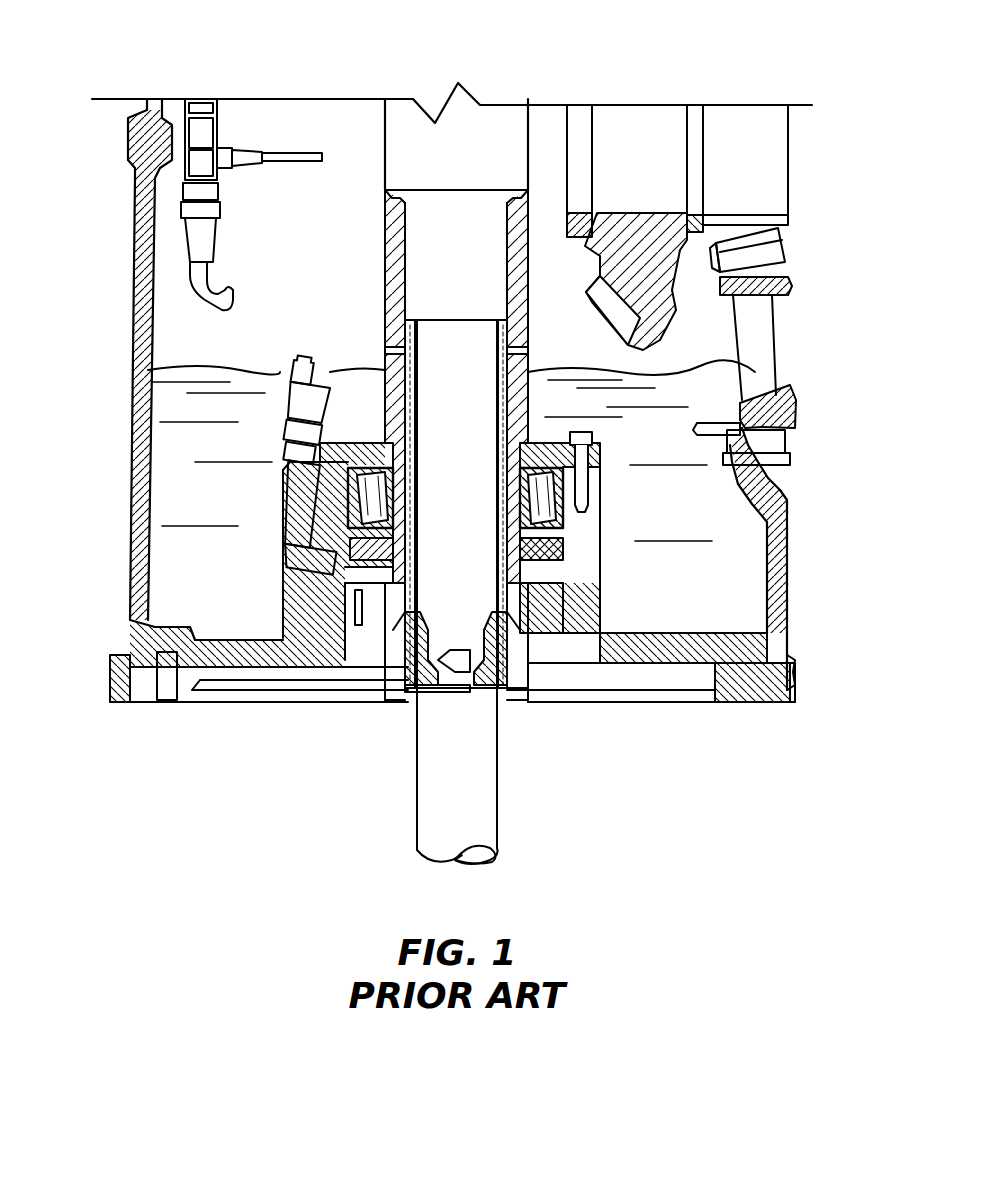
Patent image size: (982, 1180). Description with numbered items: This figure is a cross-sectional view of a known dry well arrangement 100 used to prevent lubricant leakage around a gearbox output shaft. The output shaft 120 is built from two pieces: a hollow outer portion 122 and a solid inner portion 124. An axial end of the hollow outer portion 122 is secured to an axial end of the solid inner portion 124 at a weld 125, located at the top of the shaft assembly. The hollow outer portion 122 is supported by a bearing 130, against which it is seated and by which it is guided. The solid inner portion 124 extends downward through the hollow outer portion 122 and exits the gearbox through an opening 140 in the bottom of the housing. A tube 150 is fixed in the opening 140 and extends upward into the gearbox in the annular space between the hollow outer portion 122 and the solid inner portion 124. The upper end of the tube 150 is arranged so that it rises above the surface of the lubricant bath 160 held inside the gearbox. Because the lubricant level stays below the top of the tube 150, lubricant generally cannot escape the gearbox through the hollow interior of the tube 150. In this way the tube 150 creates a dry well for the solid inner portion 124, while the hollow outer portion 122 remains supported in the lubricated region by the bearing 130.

The dry well arrangement 100 is at (568, 55).
The output shaft 120 is at (437, 399).
The hollow outer portion 122 is at (520, 308).
The solid inner portion 124 is at (417, 276).
The weld 125 is at (387, 196).
The bearing 130 is at (340, 500).
The opening 140 is at (410, 702).
The tube 150 is at (413, 390).
The lubricant bath 160 is at (160, 443).